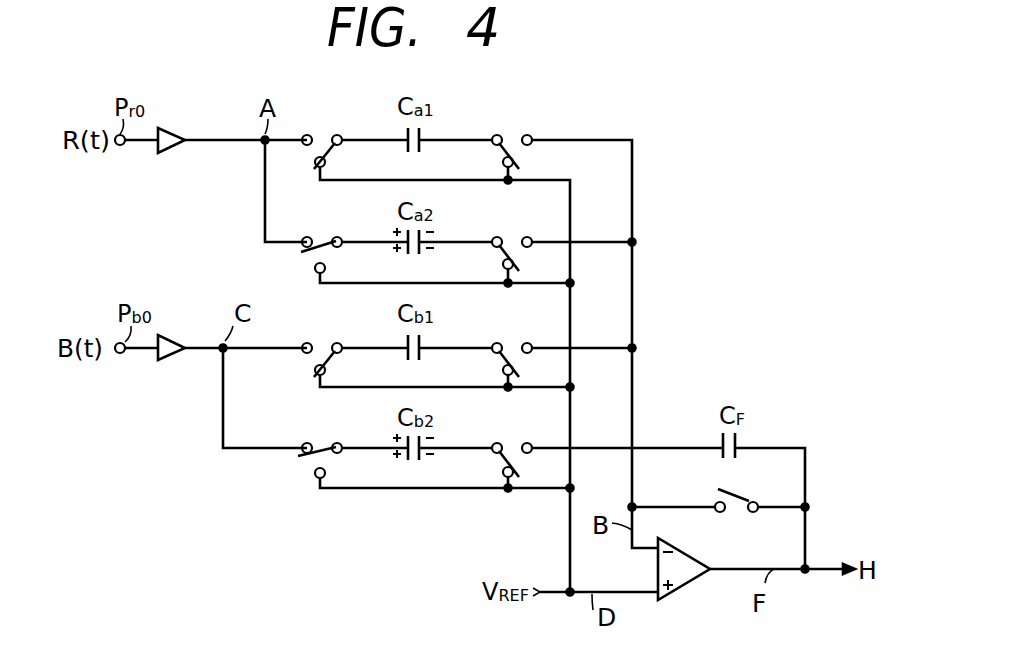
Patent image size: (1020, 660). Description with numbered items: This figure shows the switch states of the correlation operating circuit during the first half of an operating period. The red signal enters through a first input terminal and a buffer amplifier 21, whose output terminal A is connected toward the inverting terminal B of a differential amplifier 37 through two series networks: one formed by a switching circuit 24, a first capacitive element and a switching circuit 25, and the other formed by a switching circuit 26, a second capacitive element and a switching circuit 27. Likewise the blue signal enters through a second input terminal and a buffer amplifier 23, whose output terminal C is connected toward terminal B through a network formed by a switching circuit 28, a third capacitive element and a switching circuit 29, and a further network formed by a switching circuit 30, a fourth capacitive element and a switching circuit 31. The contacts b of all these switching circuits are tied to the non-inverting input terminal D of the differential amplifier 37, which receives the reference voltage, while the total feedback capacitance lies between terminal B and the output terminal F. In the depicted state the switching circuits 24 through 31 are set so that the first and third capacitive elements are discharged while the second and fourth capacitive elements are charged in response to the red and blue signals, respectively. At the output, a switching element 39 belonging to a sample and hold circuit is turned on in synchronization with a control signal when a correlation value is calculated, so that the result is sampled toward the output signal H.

The buffer amplifier 21 is at (171, 127).
The buffer amplifier 23 is at (177, 340).
The switching circuit 24 is at (322, 133).
The switching circuit 25 is at (510, 133).
The switching circuit 26 is at (322, 237).
The switching circuit 27 is at (510, 237).
The switching circuit 28 is at (325, 341).
The switching circuit 29 is at (511, 341).
The switching circuit 30 is at (325, 443).
The switching circuit 31 is at (511, 443).
The differential amplifier 37 is at (697, 580).
The switching element 39 is at (733, 495).